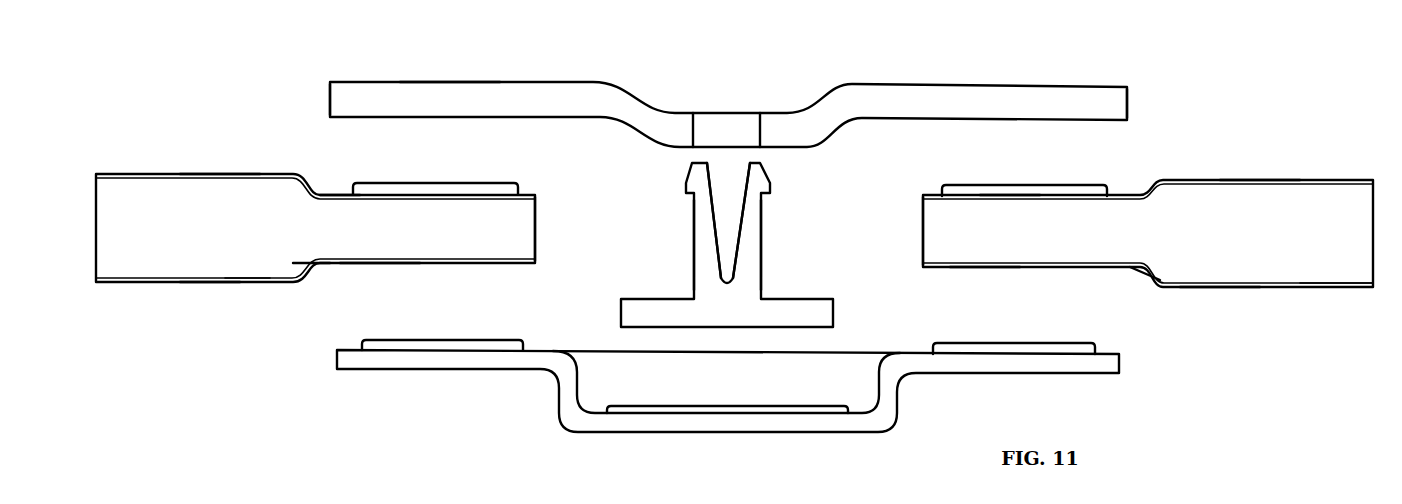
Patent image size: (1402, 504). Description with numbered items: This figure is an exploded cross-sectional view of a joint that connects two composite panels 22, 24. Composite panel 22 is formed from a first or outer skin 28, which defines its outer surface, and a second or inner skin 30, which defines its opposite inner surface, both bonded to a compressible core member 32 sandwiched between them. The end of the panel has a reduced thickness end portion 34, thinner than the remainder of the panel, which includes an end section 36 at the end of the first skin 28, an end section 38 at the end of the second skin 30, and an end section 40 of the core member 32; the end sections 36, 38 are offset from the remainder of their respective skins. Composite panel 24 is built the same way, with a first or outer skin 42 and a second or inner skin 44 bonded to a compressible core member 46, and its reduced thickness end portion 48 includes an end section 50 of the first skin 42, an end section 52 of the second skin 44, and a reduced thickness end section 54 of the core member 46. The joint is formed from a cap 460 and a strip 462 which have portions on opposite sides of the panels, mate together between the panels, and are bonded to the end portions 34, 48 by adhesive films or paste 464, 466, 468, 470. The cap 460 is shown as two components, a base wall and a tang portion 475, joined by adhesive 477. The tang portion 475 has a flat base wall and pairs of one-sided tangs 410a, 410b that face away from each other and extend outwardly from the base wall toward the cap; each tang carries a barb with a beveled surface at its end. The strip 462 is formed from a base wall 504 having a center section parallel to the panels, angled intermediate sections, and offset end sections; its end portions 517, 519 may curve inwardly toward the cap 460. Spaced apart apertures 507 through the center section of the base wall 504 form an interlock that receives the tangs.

The composite panel 22 is at (167, 165).
The composite panel 24 is at (1183, 172).
The first or outer skin 28 is at (213, 284).
The second or inner skin 30 is at (235, 172).
The compressible core member 32 is at (250, 272).
The reduced thickness end portion 34 is at (334, 240).
The end section 36 is at (360, 265).
The end section 38 is at (342, 194).
The end section 40 is at (515, 232).
The first or outer skin 42 is at (1215, 288).
The second or inner skin 44 is at (1265, 178).
The compressible core member 46 is at (1318, 275).
The reduced thickness end portion 48 is at (1097, 253).
The end section 50 is at (985, 270).
The end section 52 is at (1005, 197).
The reduced thickness end section 54 is at (925, 215).
The one-sided tang 410a is at (703, 222).
The one-sided tang 410b is at (752, 222).
The cap 460 is at (962, 382).
The strip 462 is at (1004, 75).
The adhesive film or paste 464 is at (397, 338).
The adhesive film or paste 466 is at (997, 343).
The adhesive film or paste 468 is at (460, 182).
The adhesive film or paste 470 is at (995, 184).
The tang portion 475 is at (805, 291).
The adhesive 477 is at (813, 410).
The base wall 504 is at (438, 92).
The apertures 507 is at (762, 130).
The end portion 517 is at (340, 90).
The end portion 519 is at (1118, 95).